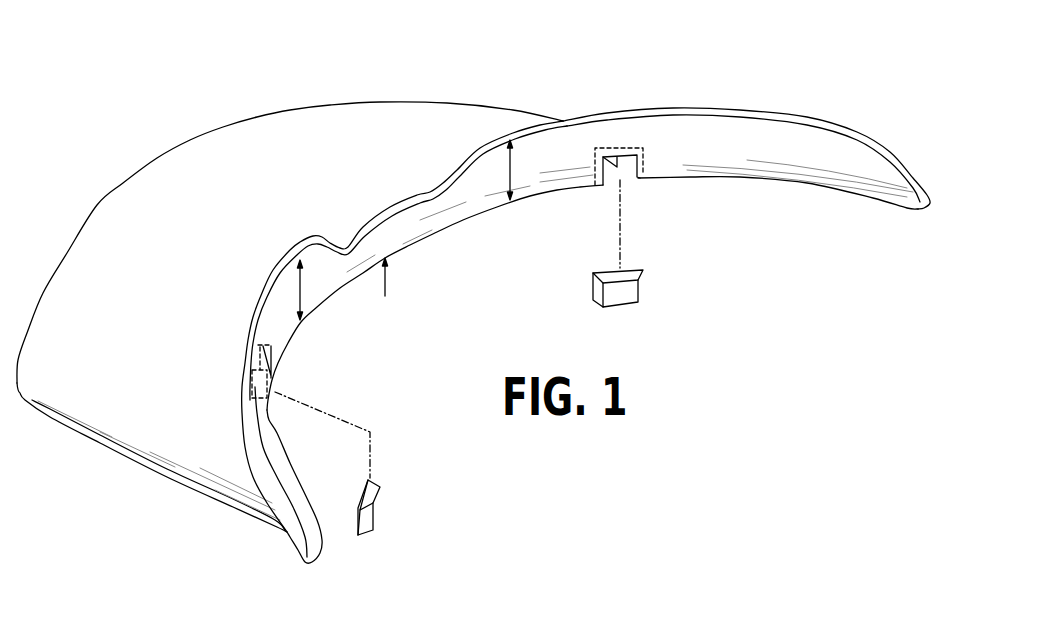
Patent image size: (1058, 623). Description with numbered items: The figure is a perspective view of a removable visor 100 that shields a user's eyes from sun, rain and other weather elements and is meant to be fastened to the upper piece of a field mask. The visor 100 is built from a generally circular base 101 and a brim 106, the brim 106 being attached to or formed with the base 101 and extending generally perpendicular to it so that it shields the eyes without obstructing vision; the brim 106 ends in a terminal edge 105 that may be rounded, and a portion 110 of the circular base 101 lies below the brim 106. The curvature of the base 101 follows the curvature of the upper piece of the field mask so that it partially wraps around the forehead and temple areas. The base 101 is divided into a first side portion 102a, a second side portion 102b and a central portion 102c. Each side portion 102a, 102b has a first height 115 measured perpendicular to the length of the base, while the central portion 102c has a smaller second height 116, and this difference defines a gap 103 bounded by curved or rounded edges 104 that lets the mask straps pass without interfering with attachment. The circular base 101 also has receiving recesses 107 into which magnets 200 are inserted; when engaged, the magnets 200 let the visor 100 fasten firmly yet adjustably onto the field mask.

The visor 100 is at (238, 79).
The circular base 101 is at (757, 125).
The first side portion 102a is at (827, 137).
The second side portion 102b is at (277, 438).
The central portion 102c is at (397, 228).
The gap 103 is at (385, 210).
The rounded edges 104 is at (361, 233).
The terminal edge 105 is at (134, 173).
The brim 106 is at (346, 123).
The receiving recesses 107 is at (617, 157).
The portion of the circular base 110 is at (693, 180).
The first height 115 is at (303, 276).
The second height 116 is at (388, 298).
The magnets 200 is at (642, 305).